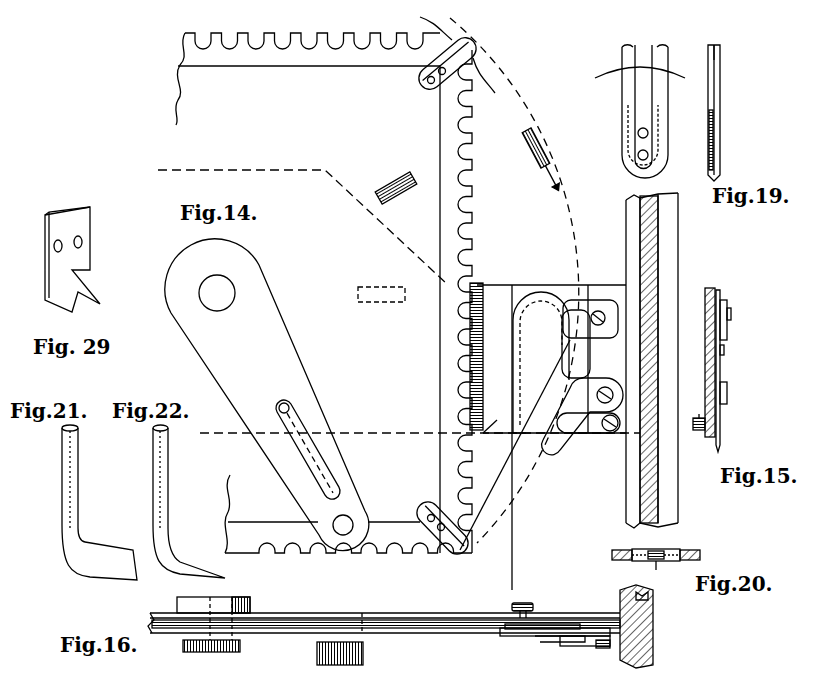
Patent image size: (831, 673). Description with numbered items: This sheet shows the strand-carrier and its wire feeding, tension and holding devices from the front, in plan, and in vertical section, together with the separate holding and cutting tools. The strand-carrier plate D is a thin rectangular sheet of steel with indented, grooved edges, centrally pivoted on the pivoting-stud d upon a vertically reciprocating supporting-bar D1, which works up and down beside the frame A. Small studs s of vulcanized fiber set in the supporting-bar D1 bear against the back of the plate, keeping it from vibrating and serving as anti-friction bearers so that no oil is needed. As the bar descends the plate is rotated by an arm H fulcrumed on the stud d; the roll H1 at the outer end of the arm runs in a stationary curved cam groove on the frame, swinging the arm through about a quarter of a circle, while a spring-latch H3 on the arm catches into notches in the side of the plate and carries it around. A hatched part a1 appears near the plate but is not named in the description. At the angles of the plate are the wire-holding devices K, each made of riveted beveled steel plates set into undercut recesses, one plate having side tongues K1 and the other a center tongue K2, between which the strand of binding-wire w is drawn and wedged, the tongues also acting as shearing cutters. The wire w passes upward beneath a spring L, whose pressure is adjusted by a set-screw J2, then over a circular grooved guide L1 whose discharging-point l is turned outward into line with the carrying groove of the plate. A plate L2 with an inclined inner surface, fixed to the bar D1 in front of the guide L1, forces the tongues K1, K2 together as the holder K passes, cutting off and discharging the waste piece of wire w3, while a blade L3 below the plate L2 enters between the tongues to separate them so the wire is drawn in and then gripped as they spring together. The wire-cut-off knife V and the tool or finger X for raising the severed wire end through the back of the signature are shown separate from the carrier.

In FIG. 14, the strand-carrier plate D is at (324, 293).
In FIG. 16, the strand-carrier plate D is at (384, 636).
In FIG. 20, the strand-carrier plate D is at (612, 556).
In FIG. 14, the supporting-bar D1 is at (548, 358).
In FIG. 15, the supporting-bar D1 is at (701, 362).
In FIG. 16, the supporting-bar D1 is at (385, 608).
In FIG. 14, the stop piece a1 is at (396, 186).
In FIG. 14, the wire-holding device K is at (442, 295).
In FIG. 19, the wire-holding device K is at (728, 142).
In FIG. 20, the wire-holding device K is at (656, 547).
In FIG. 14, the side tongues K1 is at (480, 52).
In FIG. 19, the side tongues K1 is at (624, 52).
In FIG. 20, the side tongues K1 is at (664, 543).
In FIG. 16, the center tongue K2 is at (640, 594).
In FIG. 19, the center tongue K2 is at (643, 45).
In FIG. 20, the center tongue K2 is at (657, 573).
In FIG. 14, the strand of binding-wire w is at (465, 465).
In FIG. 16, the strand of binding-wire w is at (519, 585).
In FIG. 19, the strand of binding-wire w is at (720, 55).
In FIG. 14, the waste piece of wire w3 is at (488, 82).
In FIG. 19, the waste piece of wire w3 is at (638, 69).
In FIG. 14, the pivoting-stud d is at (217, 293).
In FIG. 16, the pivoting-stud d is at (213, 632).
In FIG. 14, the arm H is at (267, 395).
In FIG. 16, the arm H is at (232, 629).
In FIG. 14, the roll H1 is at (350, 526).
In FIG. 16, the roll H1 is at (340, 653).
In FIG. 14, the spring-latch H3 is at (308, 449).
In FIG. 14, the spring L is at (519, 423).
In FIG. 16, the spring L is at (505, 636).
In FIG. 14, the circular grooved guide L1 is at (541, 362).
In FIG. 15, the circular grooved guide L1 is at (721, 295).
In FIG. 16, the circular grooved guide L1 is at (520, 636).
In FIG. 14, the inclined plate L2 is at (590, 318).
In FIG. 15, the inclined plate L2 is at (733, 320).
In FIG. 16, the inclined plate L2 is at (585, 649).
In FIG. 14, the separating blade L3 is at (582, 416).
In FIG. 15, the separating blade L3 is at (731, 400).
In FIG. 16, the separating blade L3 is at (545, 642).
In FIG. 14, the discharging-point l is at (576, 344).
In FIG. 15, the discharging-point l is at (715, 400).
In FIG. 14, the frame A is at (652, 360).
In FIG. 16, the frame A is at (642, 626).
In FIG. 15, the set-screw J2 is at (694, 421).
In FIG. 16, the set-screw J2 is at (530, 603).
In FIG. 16, the fiber studs s is at (362, 614).
In FIG. 21, the blade tool V is at (99, 502).
In FIG. 22, the blade tool X is at (189, 501).